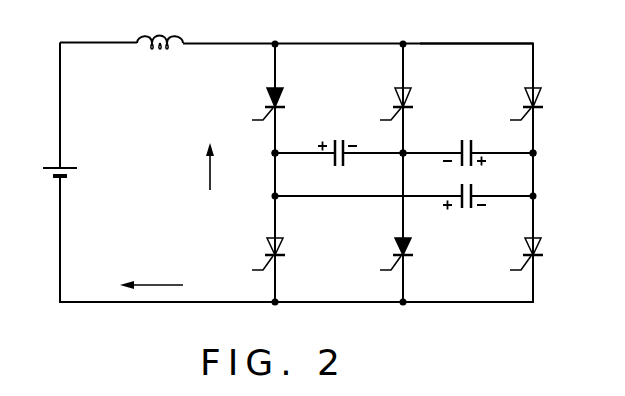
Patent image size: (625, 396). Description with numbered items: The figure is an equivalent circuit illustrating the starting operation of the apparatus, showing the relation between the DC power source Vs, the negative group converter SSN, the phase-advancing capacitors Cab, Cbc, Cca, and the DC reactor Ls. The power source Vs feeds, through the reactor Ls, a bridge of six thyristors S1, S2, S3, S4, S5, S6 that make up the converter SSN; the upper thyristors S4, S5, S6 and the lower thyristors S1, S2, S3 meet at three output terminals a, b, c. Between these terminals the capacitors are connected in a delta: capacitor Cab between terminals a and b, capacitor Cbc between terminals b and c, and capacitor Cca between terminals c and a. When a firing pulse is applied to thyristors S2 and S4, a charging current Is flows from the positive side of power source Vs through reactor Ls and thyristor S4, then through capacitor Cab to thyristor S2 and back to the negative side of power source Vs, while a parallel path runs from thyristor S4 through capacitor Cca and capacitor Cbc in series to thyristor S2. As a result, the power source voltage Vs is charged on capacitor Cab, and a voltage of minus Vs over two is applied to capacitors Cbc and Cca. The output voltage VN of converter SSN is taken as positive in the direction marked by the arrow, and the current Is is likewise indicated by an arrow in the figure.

The DC reactor Ls is at (160, 30).
The power source Vs is at (75, 170).
The output voltage of converter SSN VN is at (198, 166).
The charging current Is is at (162, 285).
The negative group converter SSN is at (476, 32).
The thyristor S1 is at (261, 252).
The thyristor S2 is at (389, 252).
The thyristor S3 is at (519, 252).
The thyristor S4 is at (261, 102).
The thyristor S5 is at (389, 102).
The thyristor S6 is at (519, 102).
The phase-advancing capacitor Cab is at (332, 140).
The phase-advancing capacitor Cbc is at (462, 140).
The phase-advancing capacitor Cca is at (468, 208).
The output terminal a is at (266, 152).
The output terminal b is at (411, 164).
The output terminal c is at (542, 164).